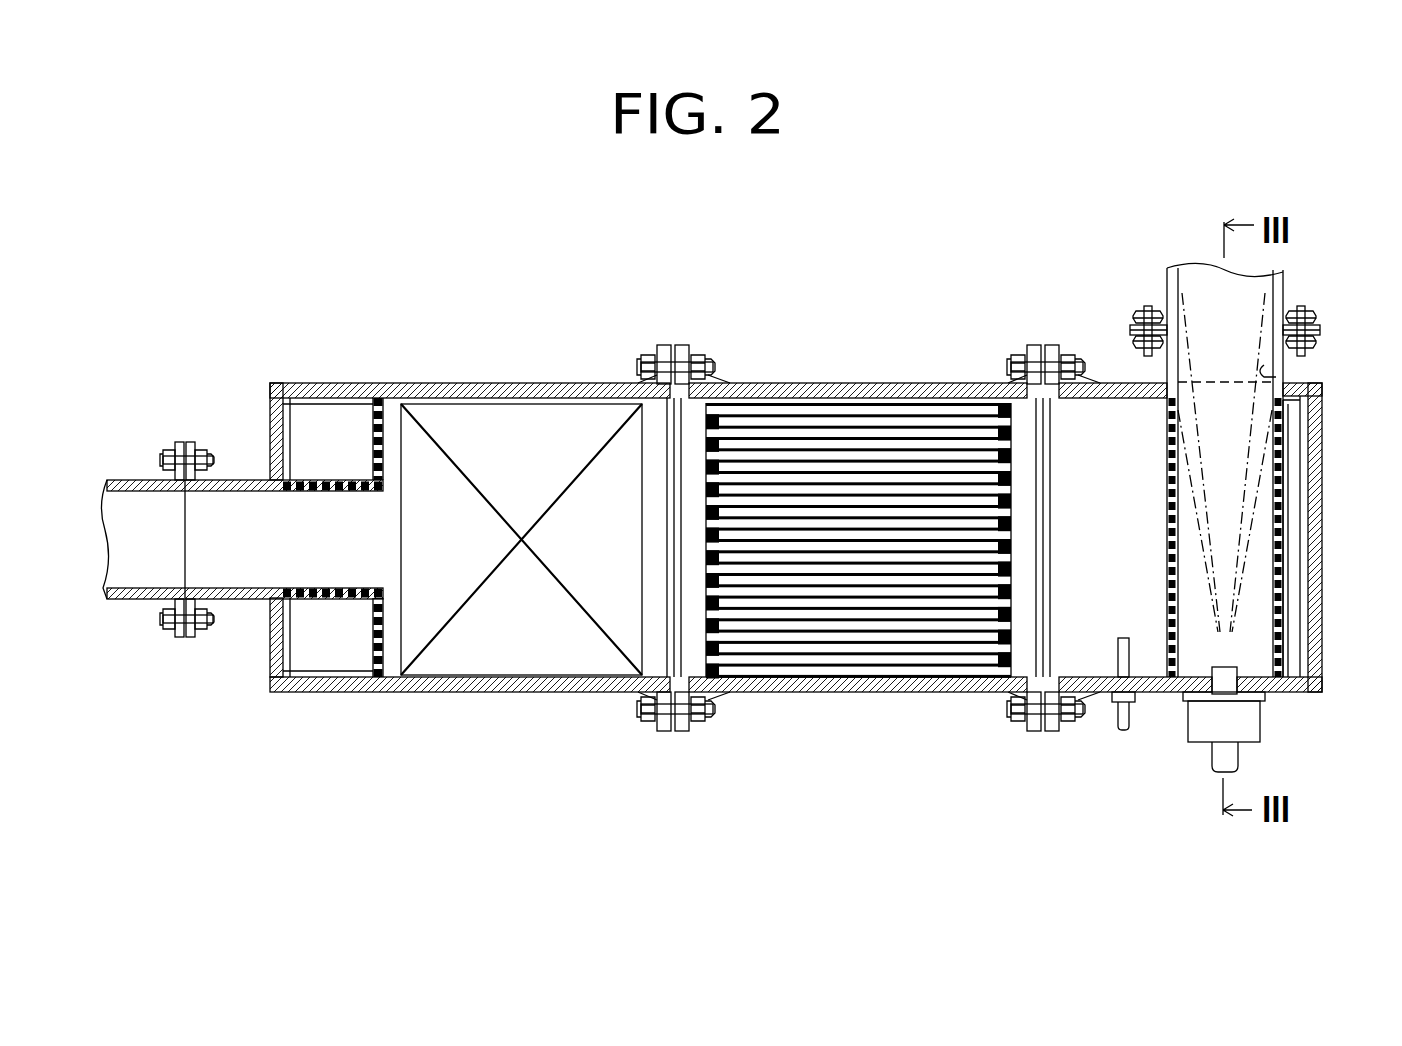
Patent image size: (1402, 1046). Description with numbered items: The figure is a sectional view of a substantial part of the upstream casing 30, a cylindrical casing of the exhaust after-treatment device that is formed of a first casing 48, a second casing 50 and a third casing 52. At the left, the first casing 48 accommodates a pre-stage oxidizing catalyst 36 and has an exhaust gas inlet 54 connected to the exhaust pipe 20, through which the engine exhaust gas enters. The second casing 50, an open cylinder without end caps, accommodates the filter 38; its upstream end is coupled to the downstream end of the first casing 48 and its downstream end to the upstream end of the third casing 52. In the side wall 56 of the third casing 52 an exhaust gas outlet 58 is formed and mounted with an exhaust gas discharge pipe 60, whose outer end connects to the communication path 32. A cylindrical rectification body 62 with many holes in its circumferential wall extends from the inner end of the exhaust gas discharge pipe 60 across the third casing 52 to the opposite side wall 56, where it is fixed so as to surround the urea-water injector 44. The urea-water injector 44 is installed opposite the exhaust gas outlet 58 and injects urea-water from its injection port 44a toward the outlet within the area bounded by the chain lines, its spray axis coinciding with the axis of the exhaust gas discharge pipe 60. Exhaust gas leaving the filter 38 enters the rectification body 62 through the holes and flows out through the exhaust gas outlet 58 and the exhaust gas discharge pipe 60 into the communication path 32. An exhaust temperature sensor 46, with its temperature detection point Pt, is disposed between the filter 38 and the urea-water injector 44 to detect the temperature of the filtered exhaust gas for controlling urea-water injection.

The exhaust pipe 20 is at (135, 479).
The upstream casing 30 is at (954, 302).
The communication path 32 is at (1231, 455).
The pre-stage oxidizing catalyst 36 is at (545, 404).
The filter 38 is at (888, 420).
The urea-water injector 44 is at (1285, 696).
The injection port 44a is at (1240, 667).
The exhaust temperature sensor 46 is at (1131, 720).
The first casing 48 is at (448, 383).
The second casing 50 is at (800, 383).
The third casing 52 is at (835, 499).
The exhaust gas inlet 54 is at (226, 480).
The side wall 56 is at (1112, 383).
The exhaust gas outlet 58 is at (1276, 372).
The exhaust gas discharge pipe 60 is at (1167, 374).
The rectification body 62 is at (1285, 485).
The temperature detection point Pt is at (1107, 655).